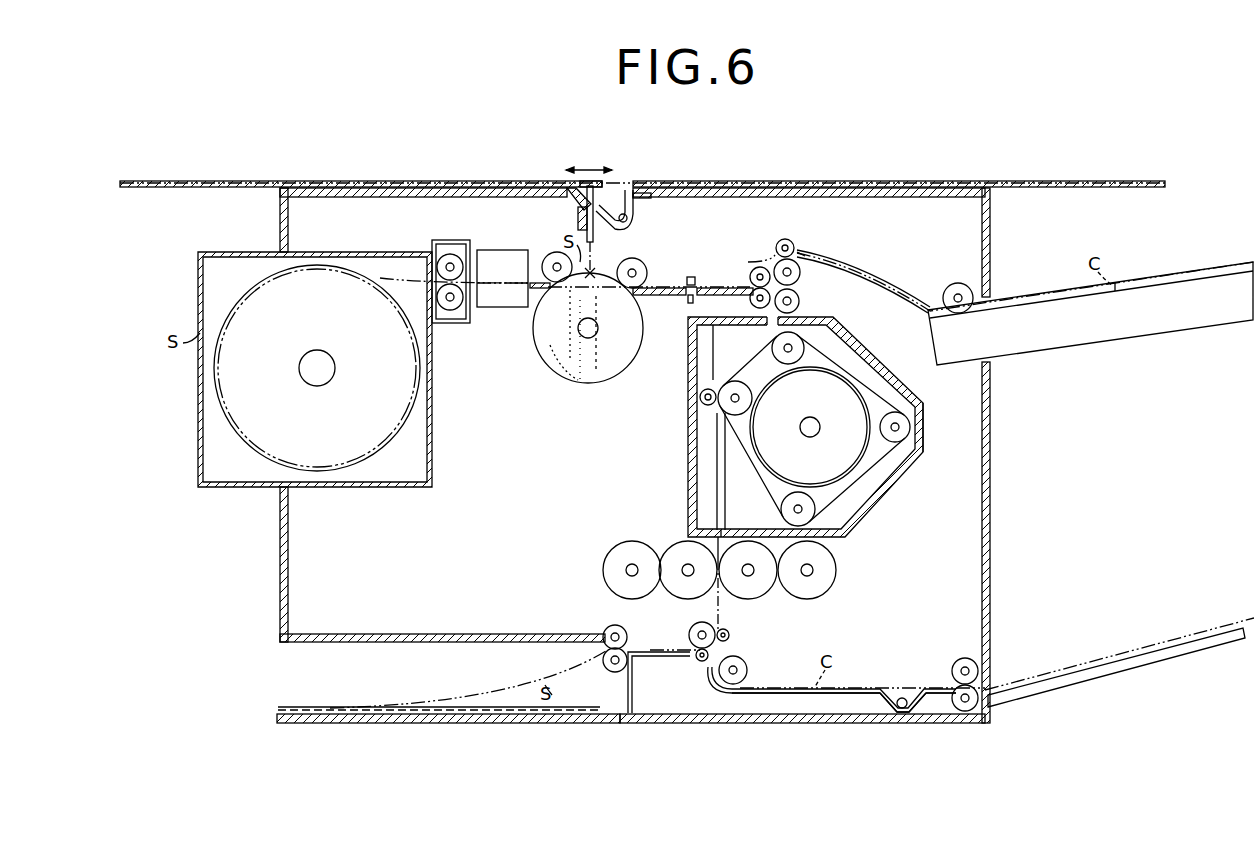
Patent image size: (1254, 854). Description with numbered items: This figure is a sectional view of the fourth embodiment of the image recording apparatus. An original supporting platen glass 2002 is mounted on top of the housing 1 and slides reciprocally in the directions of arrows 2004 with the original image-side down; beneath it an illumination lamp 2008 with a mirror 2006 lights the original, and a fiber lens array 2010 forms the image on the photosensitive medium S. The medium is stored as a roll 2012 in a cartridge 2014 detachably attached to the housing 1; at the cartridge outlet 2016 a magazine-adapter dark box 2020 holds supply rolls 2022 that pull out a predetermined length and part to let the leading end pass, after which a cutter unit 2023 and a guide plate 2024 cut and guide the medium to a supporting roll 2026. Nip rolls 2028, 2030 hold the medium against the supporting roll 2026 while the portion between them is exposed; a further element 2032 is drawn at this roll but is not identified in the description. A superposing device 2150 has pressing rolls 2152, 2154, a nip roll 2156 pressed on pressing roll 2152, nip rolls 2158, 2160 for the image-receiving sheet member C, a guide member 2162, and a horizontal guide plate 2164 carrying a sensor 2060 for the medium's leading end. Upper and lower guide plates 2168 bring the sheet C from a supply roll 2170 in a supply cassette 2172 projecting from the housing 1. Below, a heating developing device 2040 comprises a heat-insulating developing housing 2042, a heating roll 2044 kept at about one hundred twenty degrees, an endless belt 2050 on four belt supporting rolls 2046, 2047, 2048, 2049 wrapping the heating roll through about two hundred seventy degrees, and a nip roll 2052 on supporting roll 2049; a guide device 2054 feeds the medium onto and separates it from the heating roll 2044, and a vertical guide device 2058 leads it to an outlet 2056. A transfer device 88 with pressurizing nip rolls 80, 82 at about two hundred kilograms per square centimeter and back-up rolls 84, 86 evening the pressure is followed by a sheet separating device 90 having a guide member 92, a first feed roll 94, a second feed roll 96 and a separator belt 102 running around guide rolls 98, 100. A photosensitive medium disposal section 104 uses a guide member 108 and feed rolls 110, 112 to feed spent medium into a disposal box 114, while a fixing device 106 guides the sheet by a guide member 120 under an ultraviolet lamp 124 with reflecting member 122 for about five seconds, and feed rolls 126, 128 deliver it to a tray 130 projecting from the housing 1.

The housing 1 is at (280, 577).
The original supporting platen glass 2002 is at (513, 181).
The arrows 2004 is at (591, 181).
The mirror 2006 is at (642, 200).
The illumination lamp 2008 is at (622, 200).
The fiber lens array 2010 is at (584, 192).
The roll 2012 is at (230, 398).
The cartridge 2014 is at (250, 487).
The outlet 2016 is at (431, 282).
The magazine-adapter dark box 2020 is at (440, 244).
The photosensitive medium supply rolls 2022 is at (460, 310).
The cutter unit 2023 is at (488, 252).
The guide plate 2024 is at (532, 280).
The photosensitive medium supporting roll 2026 is at (573, 380).
The nip roll 2028 is at (552, 252).
The nip roll 2030 is at (650, 252).
The drum 2032 is at (592, 278).
The heating developing device 2040 is at (876, 356).
The heat-insulating developing housing 2042 is at (922, 425).
The heating roll 2044 is at (856, 452).
The belt supporting roll 2046 is at (772, 348).
The belt supporting roll 2047 is at (908, 440).
The belt supporting roll 2048 is at (782, 517).
The belt supporting roll 2049 is at (742, 373).
The endless belt 2050 is at (906, 402).
The nip roll 2052 is at (700, 401).
The guide device 2054 is at (712, 357).
The outlet 2056 is at (713, 522).
The vertical guide device 2058 is at (716, 462).
The sensor 2060 is at (690, 272).
The superposing device 2150 is at (752, 262).
The pressing roll 2152 is at (752, 302).
The pressing roll 2154 is at (801, 300).
The nip roll 2156 is at (752, 270).
The nip roll 2158 is at (800, 251).
The nip roll 2160 is at (801, 275).
The guide member 2162 is at (781, 240).
The horizontal guide plate 2164 is at (751, 294).
The upper and lower guide plates 2168 is at (866, 275).
The supply roll 2170 is at (956, 283).
The image receiving sheet member supply cassette 2172 is at (1180, 280).
The pressurizing nip roll 80 is at (680, 598).
The pressurizing nip roll 82 is at (764, 591).
The back-up roll 84 is at (611, 556).
The back-up roll 86 is at (830, 575).
The transfer device 88 is at (838, 560).
The sheet separating device 90 is at (740, 648).
The guide member 92 is at (725, 622).
The first feed roll 94 is at (689, 635).
The second feed roll 96 is at (747, 672).
The guide roll 98 is at (708, 675).
The guide roll 100 is at (729, 634).
The separator belt 102 is at (708, 655).
The photosensitive medium disposal section 104 is at (500, 728).
The fixing device 106 is at (918, 684).
The guide member 108 is at (651, 657).
The feed roll 110 is at (608, 628).
The feed roll 112 is at (608, 669).
The disposal box 114 is at (462, 712).
The guide member 120 is at (835, 697).
The reflecting member 122 is at (900, 712).
The ultraviolet lamp 124 is at (902, 698).
The feed roll 126 is at (978, 667).
The feed roll 128 is at (962, 710).
The tray 130 is at (1122, 672).